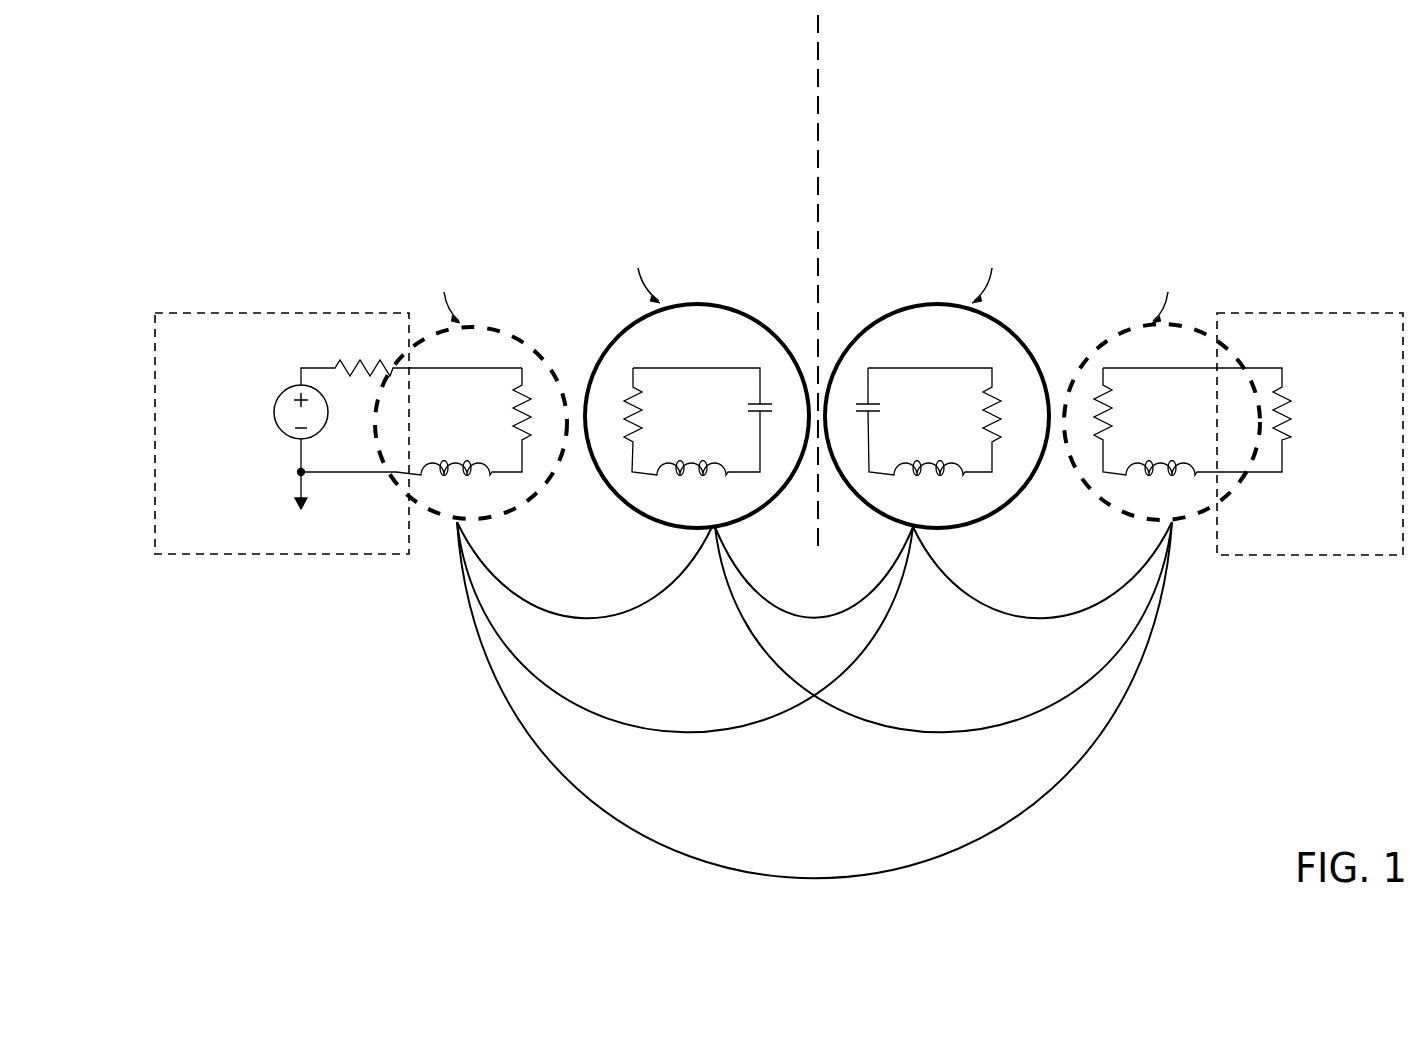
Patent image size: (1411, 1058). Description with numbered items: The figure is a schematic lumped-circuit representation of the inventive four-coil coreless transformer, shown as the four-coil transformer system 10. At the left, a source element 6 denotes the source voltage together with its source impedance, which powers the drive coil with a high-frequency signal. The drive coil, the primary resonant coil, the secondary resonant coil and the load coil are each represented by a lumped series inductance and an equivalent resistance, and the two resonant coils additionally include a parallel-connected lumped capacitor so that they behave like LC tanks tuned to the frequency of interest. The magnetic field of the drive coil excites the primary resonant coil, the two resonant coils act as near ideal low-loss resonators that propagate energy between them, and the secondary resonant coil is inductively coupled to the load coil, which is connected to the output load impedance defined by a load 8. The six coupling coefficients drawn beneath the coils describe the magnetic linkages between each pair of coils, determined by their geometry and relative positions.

The 4-coil transformer system 10 is at (92, 117).
The source element 6 is at (276, 555).
The load 8 is at (1287, 555).